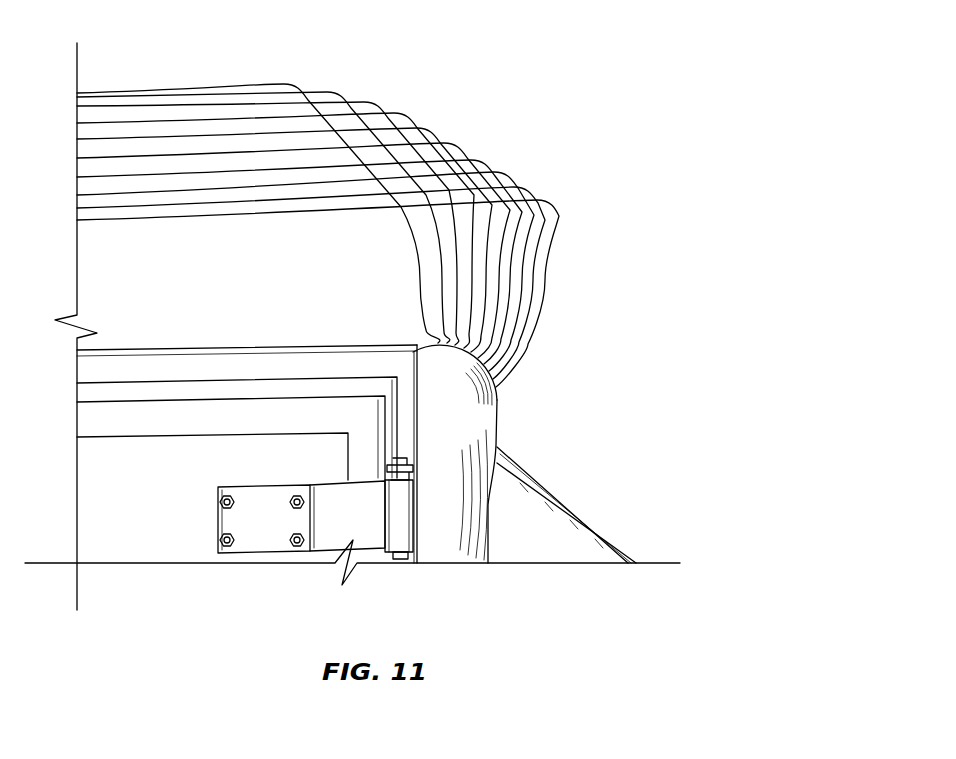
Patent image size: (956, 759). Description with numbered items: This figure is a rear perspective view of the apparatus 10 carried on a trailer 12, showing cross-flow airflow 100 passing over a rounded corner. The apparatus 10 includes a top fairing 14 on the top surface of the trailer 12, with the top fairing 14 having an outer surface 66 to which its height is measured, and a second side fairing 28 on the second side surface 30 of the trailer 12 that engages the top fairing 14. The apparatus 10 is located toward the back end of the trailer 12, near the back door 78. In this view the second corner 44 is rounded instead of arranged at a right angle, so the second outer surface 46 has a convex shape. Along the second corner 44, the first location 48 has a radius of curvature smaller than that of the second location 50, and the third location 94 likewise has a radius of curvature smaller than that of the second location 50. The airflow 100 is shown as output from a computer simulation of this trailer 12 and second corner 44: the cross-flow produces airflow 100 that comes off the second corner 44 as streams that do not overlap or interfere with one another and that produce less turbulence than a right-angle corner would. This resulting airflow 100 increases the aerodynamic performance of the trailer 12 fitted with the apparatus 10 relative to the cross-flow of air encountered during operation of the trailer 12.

The apparatus 10 is at (643, 127).
The trailer 12 is at (609, 537).
The top fairing 14 is at (221, 362).
The second side fairing 28 is at (497, 445).
The second side surface 30 is at (573, 510).
The second corner 44 is at (468, 368).
The second outer surface 46 is at (506, 395).
The first location 48 is at (497, 410).
The second location 50 is at (460, 347).
The outer surface of the top fairing 66 is at (297, 336).
The back door 78 is at (155, 535).
The third location 94 is at (427, 343).
The airflow 100 is at (400, 112).